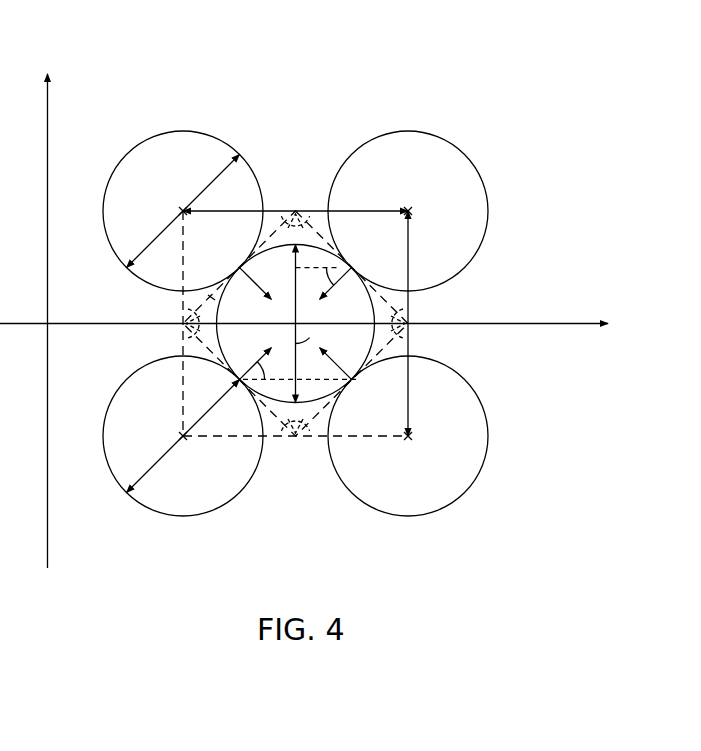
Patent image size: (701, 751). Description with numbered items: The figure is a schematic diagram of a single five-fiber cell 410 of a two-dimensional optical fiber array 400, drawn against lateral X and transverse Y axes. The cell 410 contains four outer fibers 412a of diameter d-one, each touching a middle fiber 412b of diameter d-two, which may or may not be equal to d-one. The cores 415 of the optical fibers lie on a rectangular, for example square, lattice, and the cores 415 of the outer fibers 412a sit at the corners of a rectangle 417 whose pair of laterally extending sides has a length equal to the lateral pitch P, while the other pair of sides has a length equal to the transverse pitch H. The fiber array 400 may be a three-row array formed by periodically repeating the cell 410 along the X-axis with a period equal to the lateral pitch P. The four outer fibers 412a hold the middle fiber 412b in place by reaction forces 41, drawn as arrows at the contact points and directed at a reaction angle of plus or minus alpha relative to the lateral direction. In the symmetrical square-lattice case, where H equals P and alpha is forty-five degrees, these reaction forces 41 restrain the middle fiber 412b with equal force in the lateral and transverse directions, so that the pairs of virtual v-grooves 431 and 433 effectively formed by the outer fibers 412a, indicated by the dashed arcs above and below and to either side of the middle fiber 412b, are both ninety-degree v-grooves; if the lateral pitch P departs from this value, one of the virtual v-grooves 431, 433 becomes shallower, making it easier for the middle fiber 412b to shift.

The optical fiber array 400 is at (318, 43).
The cell 410 is at (493, 90).
The outer fibers 412a is at (192, 130).
The middle fiber 412b is at (205, 302).
The cores 415 is at (183, 206).
The rectangle 417 is at (236, 440).
The virtual v-groove 431 is at (308, 212).
The virtual v-groove 433 is at (196, 334).
The reaction forces 41 is at (254, 375).